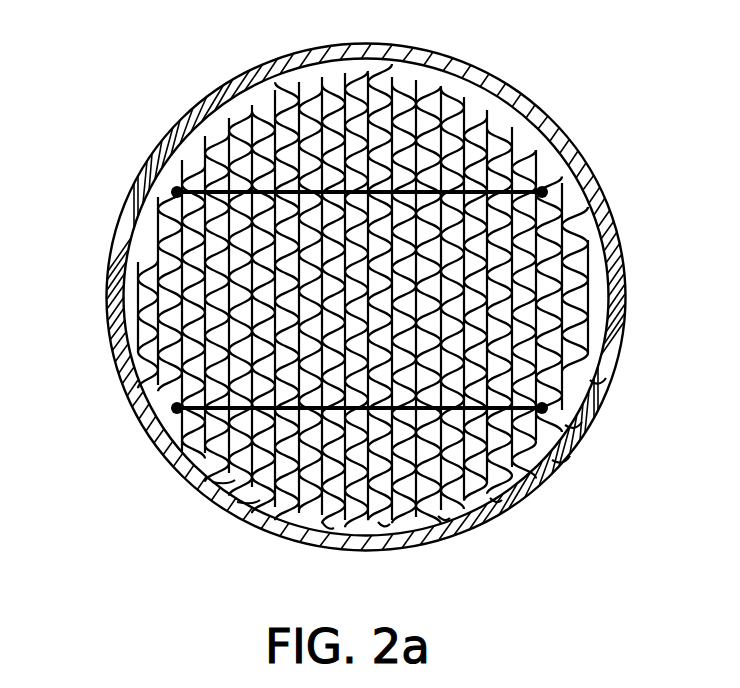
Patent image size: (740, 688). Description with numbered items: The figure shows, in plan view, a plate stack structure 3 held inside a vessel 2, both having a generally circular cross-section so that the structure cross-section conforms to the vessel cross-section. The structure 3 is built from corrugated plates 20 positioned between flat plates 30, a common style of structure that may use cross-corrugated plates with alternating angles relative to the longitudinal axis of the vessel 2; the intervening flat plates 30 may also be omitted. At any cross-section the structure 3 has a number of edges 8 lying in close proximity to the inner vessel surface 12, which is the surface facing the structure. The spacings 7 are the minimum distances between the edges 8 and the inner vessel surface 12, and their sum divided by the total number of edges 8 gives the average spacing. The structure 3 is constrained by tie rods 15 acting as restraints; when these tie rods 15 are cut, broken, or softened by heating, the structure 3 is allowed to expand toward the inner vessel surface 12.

The vessel 2 is at (577, 145).
The structure 3 is at (493, 93).
The inner vessel surface 12 is at (115, 248).
The edges 8 is at (577, 215).
The tie rods 15 is at (336, 128).
The spacings 7 is at (207, 497).
The corrugated plates 20 is at (383, 520).
The flat plates 30 is at (327, 530).